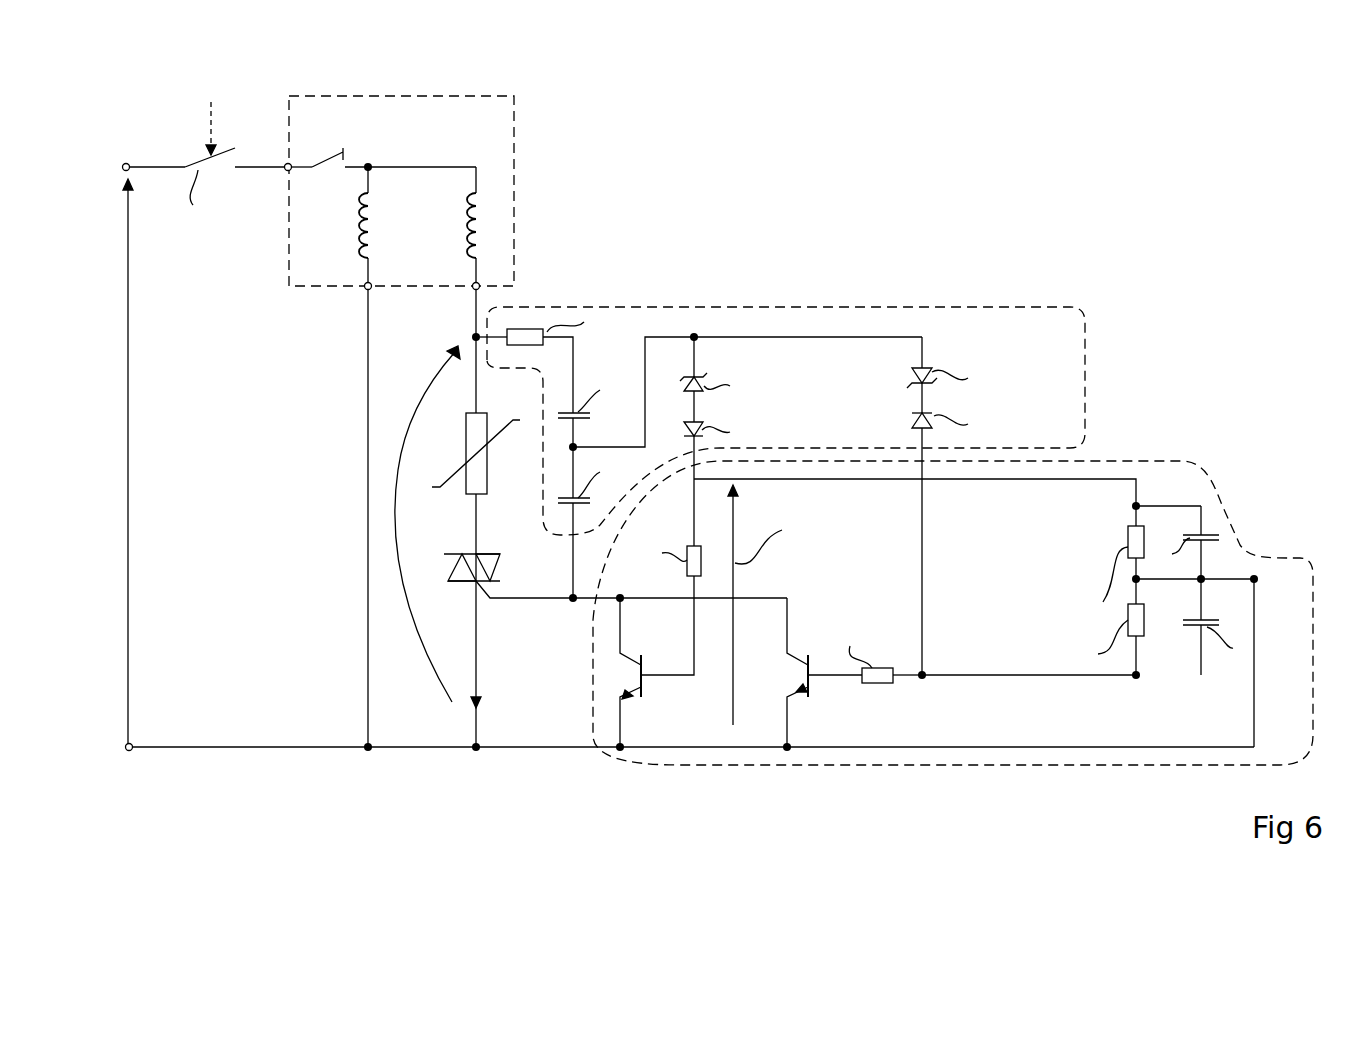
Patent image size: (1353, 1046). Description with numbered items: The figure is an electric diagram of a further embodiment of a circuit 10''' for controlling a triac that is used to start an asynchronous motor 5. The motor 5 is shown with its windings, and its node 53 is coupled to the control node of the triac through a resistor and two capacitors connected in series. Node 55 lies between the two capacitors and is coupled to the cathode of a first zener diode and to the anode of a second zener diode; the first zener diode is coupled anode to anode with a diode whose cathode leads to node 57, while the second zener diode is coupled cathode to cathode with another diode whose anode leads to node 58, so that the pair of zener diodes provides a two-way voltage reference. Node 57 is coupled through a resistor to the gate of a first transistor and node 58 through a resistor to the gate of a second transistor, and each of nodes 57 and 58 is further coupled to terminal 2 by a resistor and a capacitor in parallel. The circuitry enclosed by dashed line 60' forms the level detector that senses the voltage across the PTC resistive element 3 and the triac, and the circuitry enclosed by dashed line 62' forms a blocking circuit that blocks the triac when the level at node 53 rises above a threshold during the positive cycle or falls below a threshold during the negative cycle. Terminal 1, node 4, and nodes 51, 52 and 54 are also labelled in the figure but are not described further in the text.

The first input terminal 1 is at (126, 163).
The terminal 2 is at (125, 748).
The PTC resistive element 3 is at (490, 462).
The motor winding node 4 is at (372, 166).
The asynchronous motor 5 is at (514, 172).
The motor input node 51 is at (288, 163).
The main winding output node 52 is at (366, 290).
The node 53 is at (480, 290).
The triac gate node 54 is at (573, 602).
The node 55 is at (698, 334).
The node 57 is at (1134, 508).
The node 58 is at (924, 678).
The dashed line 60' is at (786, 467).
The dashed line 62' is at (953, 641).
The circuit 10''' is at (699, 450).